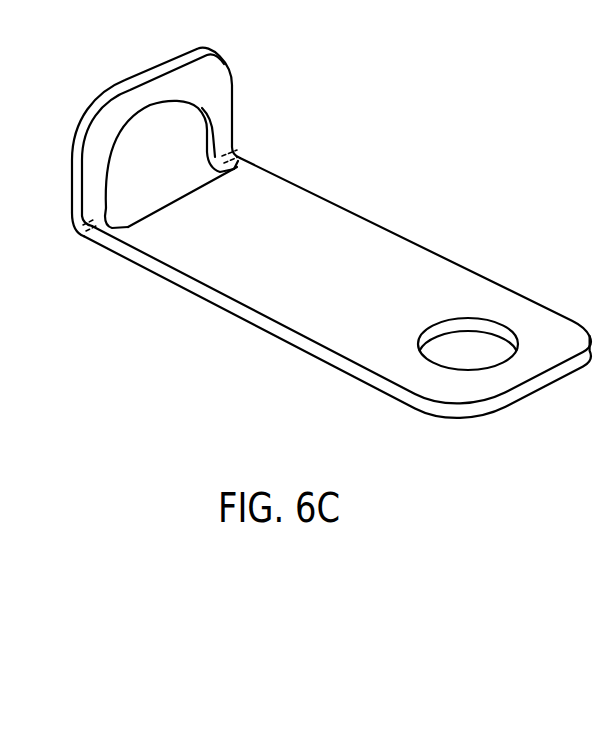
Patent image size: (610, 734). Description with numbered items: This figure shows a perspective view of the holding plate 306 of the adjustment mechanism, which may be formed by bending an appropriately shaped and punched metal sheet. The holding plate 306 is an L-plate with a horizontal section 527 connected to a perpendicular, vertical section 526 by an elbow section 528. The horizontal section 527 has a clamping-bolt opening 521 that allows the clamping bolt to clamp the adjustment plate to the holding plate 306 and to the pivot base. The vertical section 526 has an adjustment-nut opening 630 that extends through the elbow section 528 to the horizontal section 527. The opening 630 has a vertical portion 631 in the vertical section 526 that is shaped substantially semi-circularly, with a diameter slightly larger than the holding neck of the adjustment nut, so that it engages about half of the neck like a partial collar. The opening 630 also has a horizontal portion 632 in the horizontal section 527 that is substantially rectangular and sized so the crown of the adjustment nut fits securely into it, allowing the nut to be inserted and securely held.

The holding plate 306 is at (278, 392).
The clamping-bolt opening 521 is at (450, 340).
The vertical section 526 is at (87, 120).
The horizontal section 527 is at (117, 252).
The elbow section 528 is at (71, 229).
The adjustment-nut opening 630 is at (177, 131).
The vertical portion 631 is at (152, 132).
The horizontal portion 632 is at (121, 225).